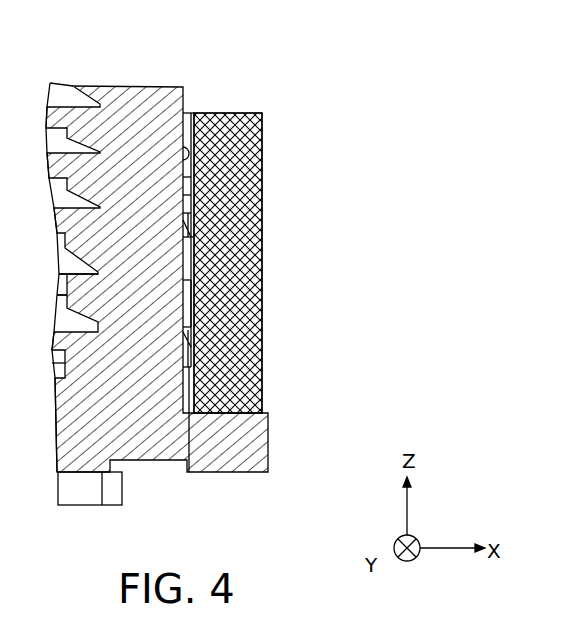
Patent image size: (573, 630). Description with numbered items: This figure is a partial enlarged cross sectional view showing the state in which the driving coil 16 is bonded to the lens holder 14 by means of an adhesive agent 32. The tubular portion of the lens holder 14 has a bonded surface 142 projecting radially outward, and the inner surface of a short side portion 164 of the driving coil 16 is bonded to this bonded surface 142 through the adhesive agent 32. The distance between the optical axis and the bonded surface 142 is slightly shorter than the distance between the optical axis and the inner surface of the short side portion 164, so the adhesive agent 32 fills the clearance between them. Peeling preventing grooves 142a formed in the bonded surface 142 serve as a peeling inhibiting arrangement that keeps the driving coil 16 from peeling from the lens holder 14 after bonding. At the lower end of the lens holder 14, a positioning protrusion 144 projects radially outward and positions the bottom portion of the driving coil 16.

The lens holder 14 is at (139, 86).
The bonded surface 142 is at (243, 111).
The peeling preventing groove 142a is at (197, 241).
The adhesive agent 32 is at (213, 160).
The driving coil 16 is at (263, 237).
The short side portion 164 is at (242, 303).
The positioning protrusion 144 is at (247, 472).